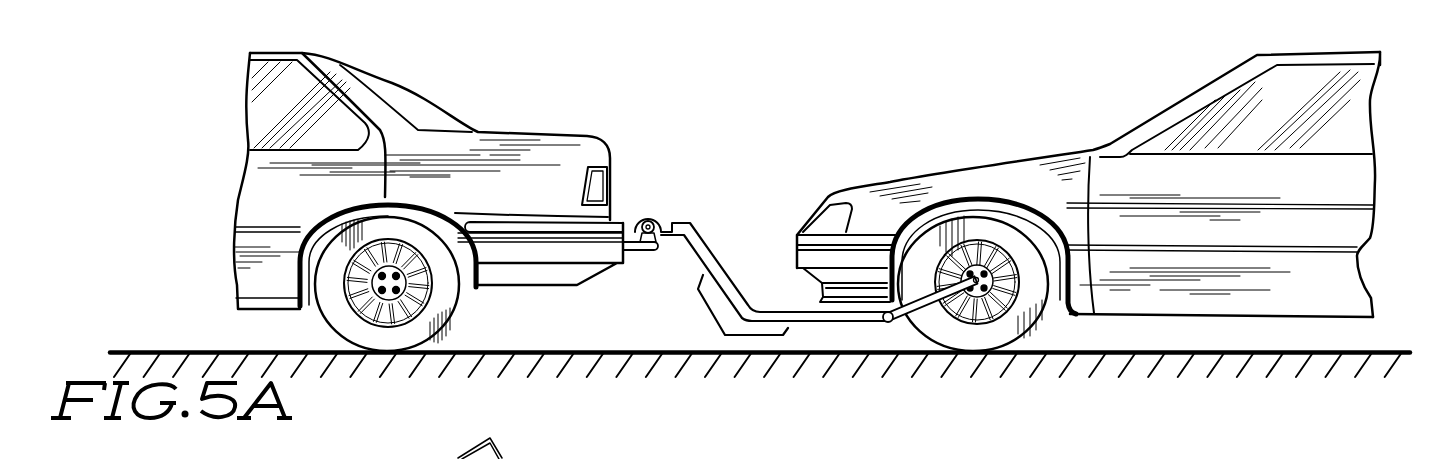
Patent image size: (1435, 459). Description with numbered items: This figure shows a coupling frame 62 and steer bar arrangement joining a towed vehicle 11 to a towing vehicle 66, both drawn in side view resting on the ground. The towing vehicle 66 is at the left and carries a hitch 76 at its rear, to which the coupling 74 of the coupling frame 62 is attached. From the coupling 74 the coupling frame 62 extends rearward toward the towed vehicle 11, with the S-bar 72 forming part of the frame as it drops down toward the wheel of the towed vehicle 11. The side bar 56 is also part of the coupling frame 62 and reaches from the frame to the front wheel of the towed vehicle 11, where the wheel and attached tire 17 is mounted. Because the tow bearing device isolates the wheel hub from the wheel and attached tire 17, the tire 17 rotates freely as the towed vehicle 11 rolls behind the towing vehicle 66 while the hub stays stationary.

The vehicle 11 is at (993, 180).
The wheel and attached tire 17 is at (1010, 302).
The side bar 56 is at (915, 309).
The coupling frame 62 is at (752, 278).
The towing vehicle 66 is at (522, 147).
The S-bar 72 is at (707, 310).
The coupling 74 is at (638, 222).
The hitch 76 is at (655, 222).